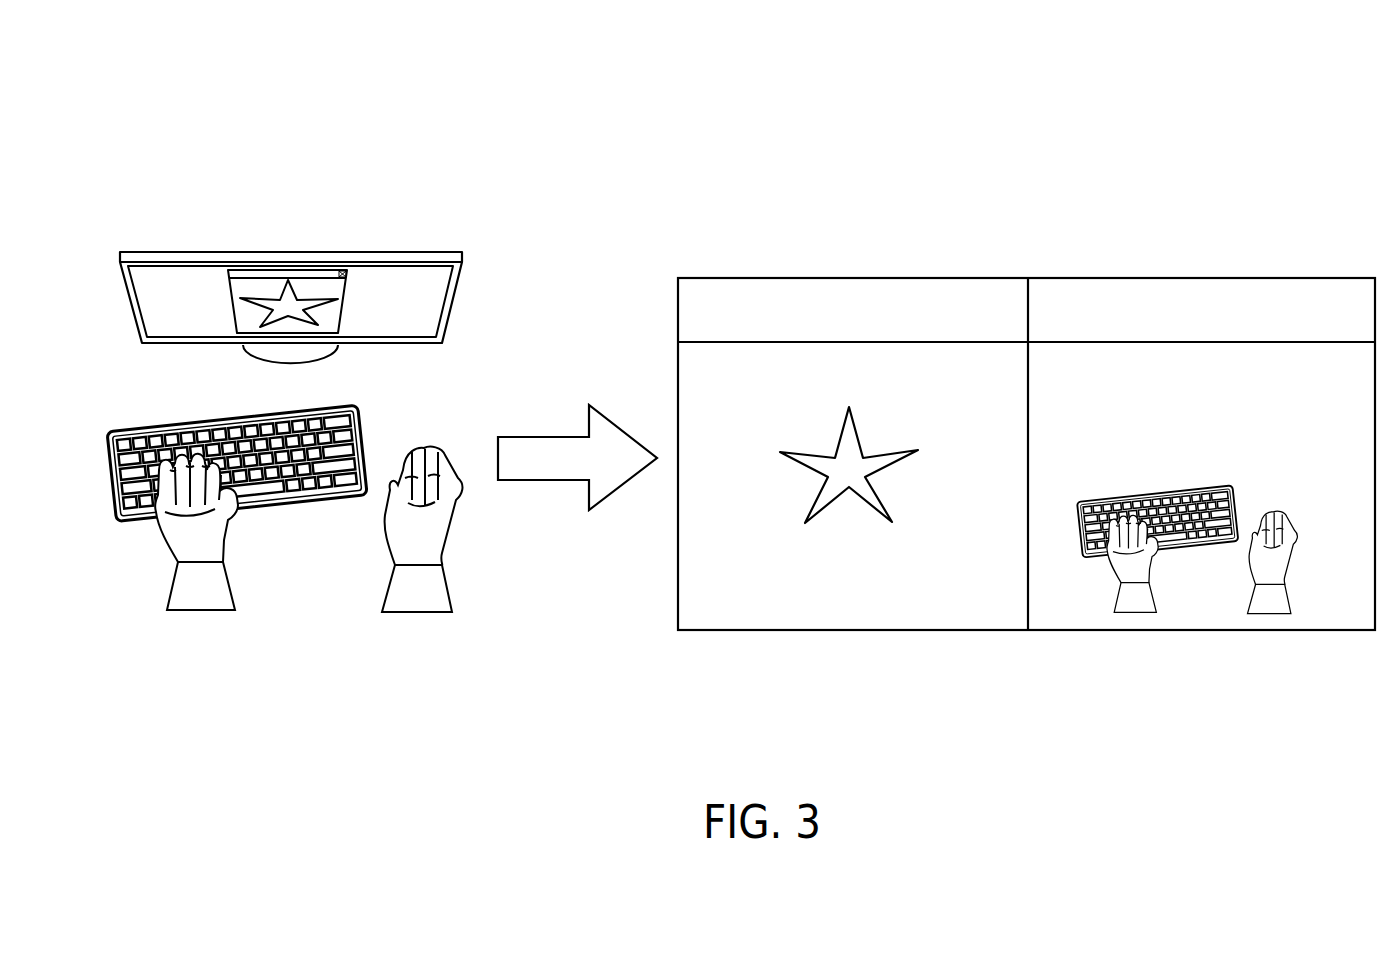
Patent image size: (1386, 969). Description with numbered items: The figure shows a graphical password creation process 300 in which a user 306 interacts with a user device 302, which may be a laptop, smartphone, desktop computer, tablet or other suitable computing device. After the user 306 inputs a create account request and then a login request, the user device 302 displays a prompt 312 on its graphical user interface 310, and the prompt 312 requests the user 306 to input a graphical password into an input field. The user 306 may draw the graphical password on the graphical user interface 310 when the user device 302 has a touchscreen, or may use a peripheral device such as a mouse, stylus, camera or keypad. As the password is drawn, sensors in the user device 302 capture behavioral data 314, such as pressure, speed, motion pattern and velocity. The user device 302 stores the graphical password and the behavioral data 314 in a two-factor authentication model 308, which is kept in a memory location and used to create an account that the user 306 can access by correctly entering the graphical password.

The graphical password creation process 300 is at (182, 90).
The user device 302 is at (378, 250).
The user 306 is at (148, 624).
The two-factor authentication model 308 is at (1026, 429).
The graphical user interface 310 is at (428, 303).
The prompt 312 is at (237, 307).
The behavioral data 314 is at (1293, 348).